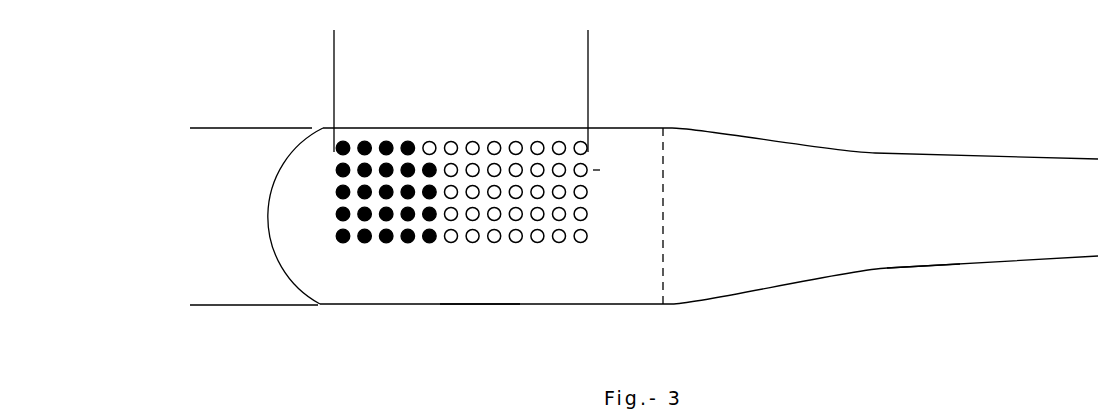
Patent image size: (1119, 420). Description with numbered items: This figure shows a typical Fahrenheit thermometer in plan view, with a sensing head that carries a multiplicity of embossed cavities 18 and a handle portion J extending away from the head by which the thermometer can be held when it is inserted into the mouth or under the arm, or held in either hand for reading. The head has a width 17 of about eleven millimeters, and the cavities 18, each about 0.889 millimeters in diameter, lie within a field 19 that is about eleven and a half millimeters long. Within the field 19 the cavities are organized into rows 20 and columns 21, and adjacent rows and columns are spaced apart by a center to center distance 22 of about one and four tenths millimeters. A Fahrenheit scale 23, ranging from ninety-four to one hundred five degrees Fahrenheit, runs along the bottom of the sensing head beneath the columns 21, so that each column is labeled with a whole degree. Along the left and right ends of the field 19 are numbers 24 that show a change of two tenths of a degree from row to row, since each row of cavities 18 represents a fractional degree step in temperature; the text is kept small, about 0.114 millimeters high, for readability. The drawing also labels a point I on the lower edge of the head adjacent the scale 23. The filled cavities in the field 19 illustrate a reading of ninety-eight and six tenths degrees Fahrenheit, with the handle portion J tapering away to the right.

The width 17 is at (206, 128).
The cavities 18 is at (574, 102).
The field 19 is at (334, 47).
The rows 20 is at (600, 168).
The columns 21 is at (473, 141).
The center to center distance 22 is at (437, 102).
The Fahrenheit scale 23 is at (590, 274).
The numbers 24 is at (317, 245).
The straight edge of probe body I is at (473, 305).
The handle portion J is at (925, 269).